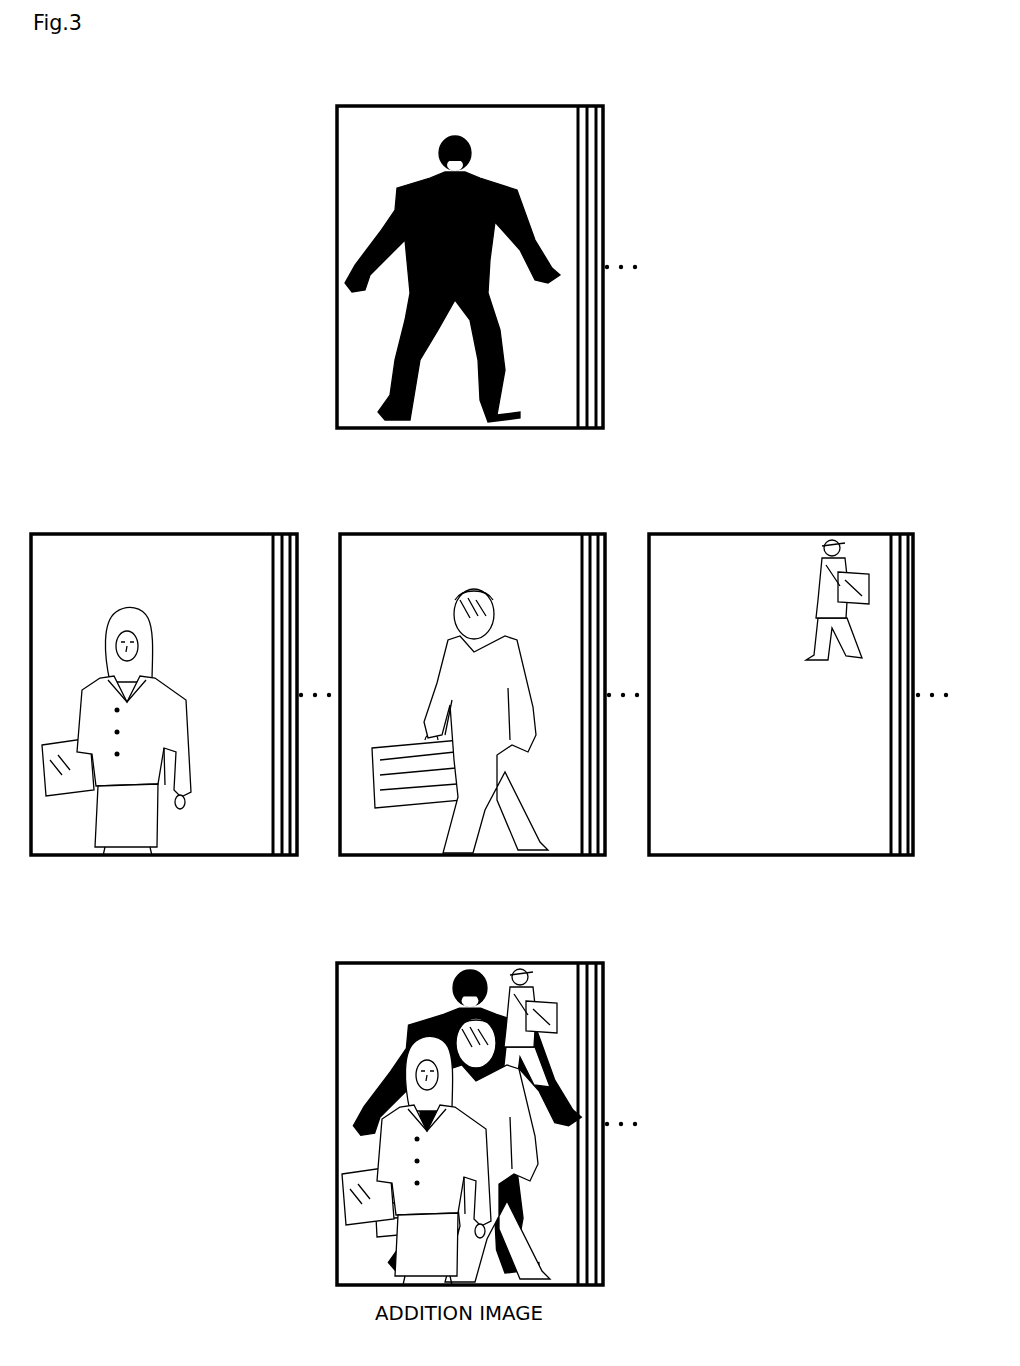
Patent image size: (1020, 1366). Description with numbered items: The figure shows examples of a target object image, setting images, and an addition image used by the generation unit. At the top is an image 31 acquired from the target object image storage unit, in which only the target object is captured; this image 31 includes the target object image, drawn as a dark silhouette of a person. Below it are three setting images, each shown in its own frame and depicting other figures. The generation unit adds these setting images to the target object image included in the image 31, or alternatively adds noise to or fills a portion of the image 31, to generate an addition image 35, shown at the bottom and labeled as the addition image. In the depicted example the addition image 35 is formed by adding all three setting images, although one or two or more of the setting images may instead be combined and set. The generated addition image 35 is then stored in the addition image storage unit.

The image 31 is at (462, 106).
The addition image 35 is at (463, 963).